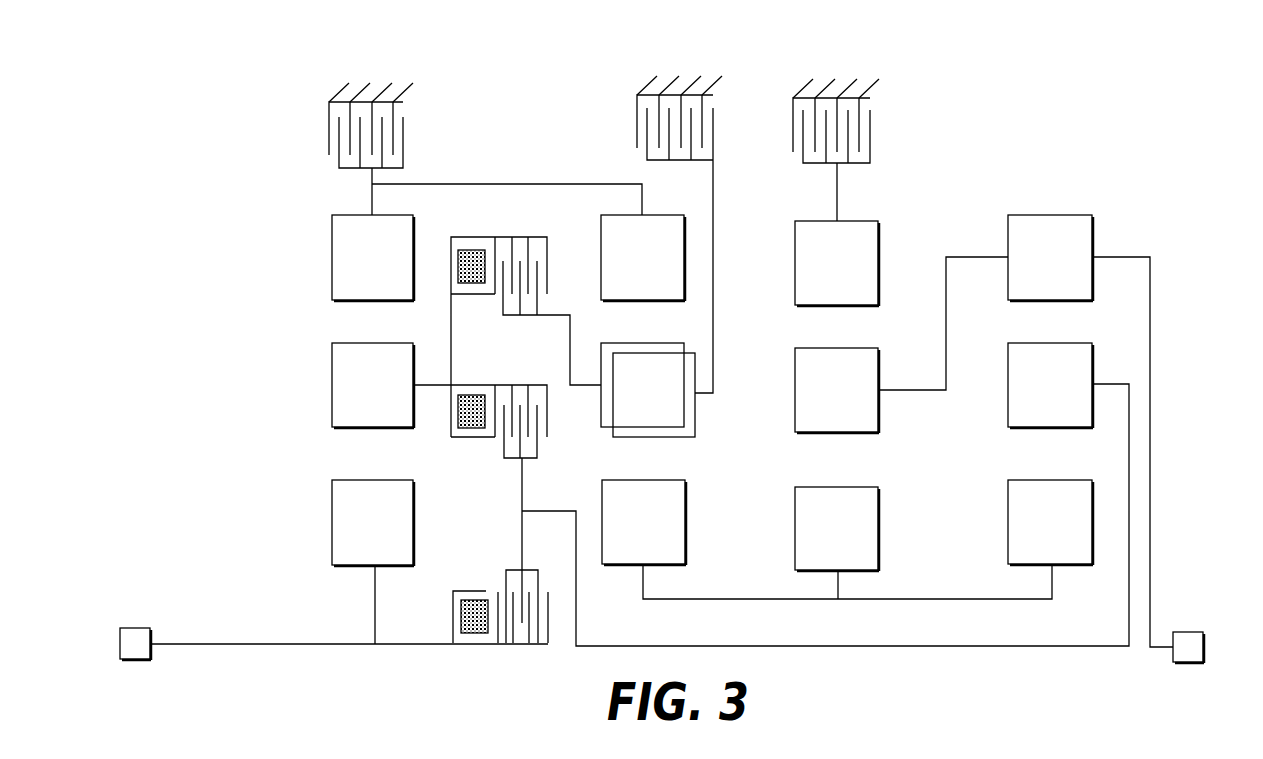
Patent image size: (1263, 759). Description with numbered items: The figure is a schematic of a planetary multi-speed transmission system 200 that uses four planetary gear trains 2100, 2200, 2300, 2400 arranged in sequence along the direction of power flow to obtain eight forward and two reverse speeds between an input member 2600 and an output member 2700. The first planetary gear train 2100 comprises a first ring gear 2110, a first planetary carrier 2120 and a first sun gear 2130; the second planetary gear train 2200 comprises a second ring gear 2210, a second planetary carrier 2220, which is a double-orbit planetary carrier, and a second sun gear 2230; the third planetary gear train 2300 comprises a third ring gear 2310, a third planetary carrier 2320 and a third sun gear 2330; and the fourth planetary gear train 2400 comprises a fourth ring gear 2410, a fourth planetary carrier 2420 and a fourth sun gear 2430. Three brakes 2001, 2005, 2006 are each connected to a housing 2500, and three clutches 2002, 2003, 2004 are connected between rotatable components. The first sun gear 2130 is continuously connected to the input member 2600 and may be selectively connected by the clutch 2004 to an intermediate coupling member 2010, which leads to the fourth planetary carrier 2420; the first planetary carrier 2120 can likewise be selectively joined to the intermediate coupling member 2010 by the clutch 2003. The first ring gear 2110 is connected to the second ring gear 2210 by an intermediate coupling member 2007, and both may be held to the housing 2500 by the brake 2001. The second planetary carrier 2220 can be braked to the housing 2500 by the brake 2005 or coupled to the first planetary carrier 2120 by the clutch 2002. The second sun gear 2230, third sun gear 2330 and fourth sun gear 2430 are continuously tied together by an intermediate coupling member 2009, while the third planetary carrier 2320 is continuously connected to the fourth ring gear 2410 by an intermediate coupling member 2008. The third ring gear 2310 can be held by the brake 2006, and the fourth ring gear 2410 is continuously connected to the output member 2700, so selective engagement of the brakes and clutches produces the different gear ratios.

The planetary multi-speed transmission system 200 is at (1134, 62).
The brake 2001 is at (329, 115).
The clutch 2002 is at (495, 223).
The clutch 2003 is at (472, 383).
The clutch 2004 is at (462, 590).
The brake 2005 is at (637, 108).
The brake 2006 is at (793, 113).
The intermediate coupling member 2007 is at (462, 184).
The intermediate coupling member 2008 is at (945, 255).
The intermediate coupling member 2009 is at (925, 600).
The intermediate coupling member 2010 is at (922, 647).
The first planetary gear train 2100 is at (326, 203).
The first ring gear 2110 is at (354, 268).
The first planetary carrier 2120 is at (354, 396).
The first sun gear 2130 is at (354, 534).
The second planetary gear train 2200 is at (686, 193).
The second ring gear 2210 is at (624, 268).
The second planetary carrier 2220 is at (634, 402).
The second sun gear 2230 is at (625, 534).
The third planetary gear train 2300 is at (877, 200).
The third ring gear 2310 is at (818, 274).
The third planetary carrier 2320 is at (818, 402).
The third sun gear 2330 is at (818, 540).
The fourth planetary gear train 2400 is at (1028, 203).
The fourth ring gear 2410 is at (1032, 268).
The fourth planetary carrier 2420 is at (1032, 396).
The fourth sun gear 2430 is at (1032, 534).
The housing 2500 is at (370, 83).
The input member 2600 is at (138, 627).
The output member 2700 is at (1190, 664).